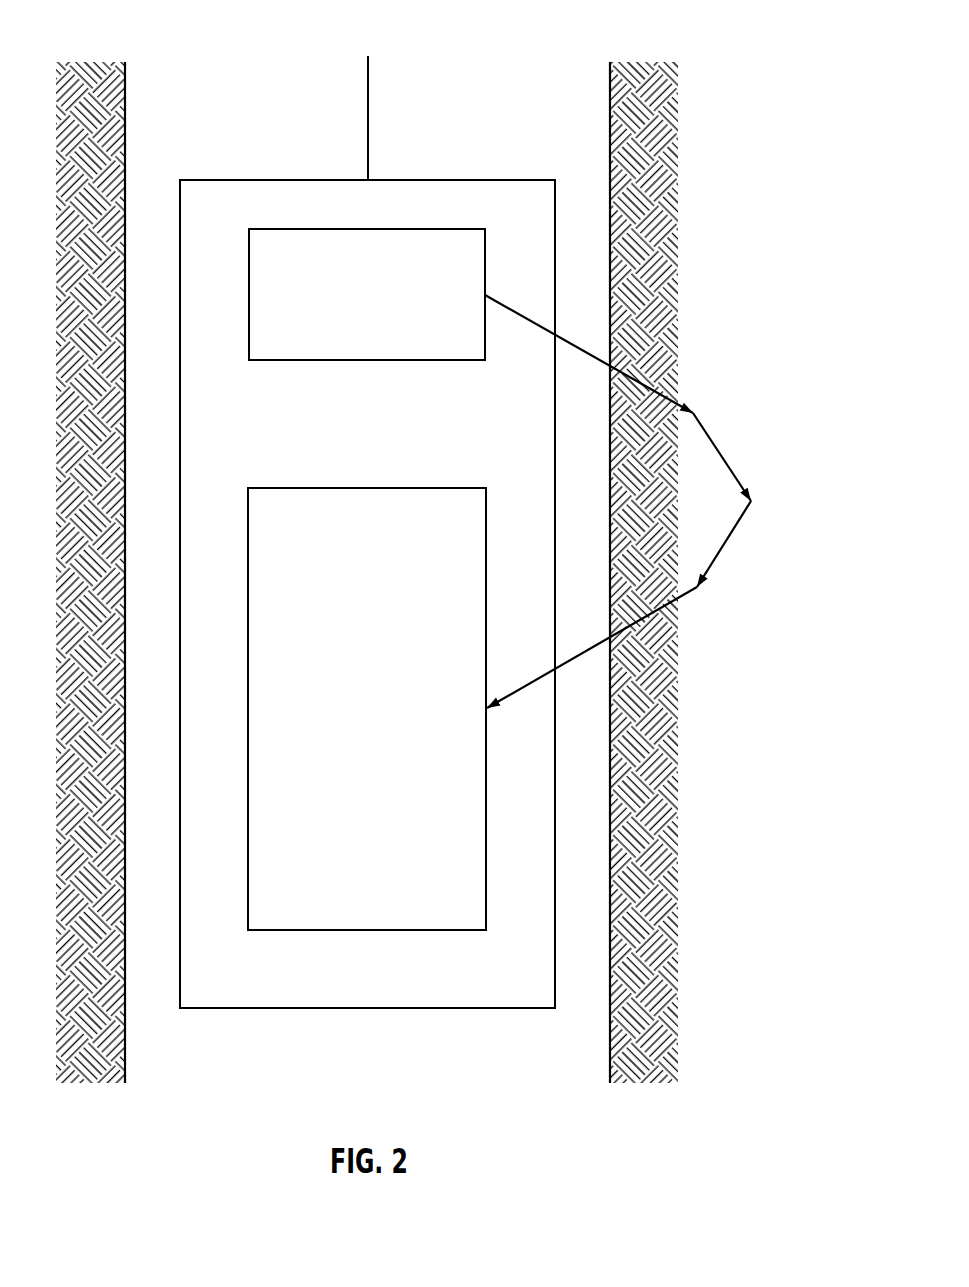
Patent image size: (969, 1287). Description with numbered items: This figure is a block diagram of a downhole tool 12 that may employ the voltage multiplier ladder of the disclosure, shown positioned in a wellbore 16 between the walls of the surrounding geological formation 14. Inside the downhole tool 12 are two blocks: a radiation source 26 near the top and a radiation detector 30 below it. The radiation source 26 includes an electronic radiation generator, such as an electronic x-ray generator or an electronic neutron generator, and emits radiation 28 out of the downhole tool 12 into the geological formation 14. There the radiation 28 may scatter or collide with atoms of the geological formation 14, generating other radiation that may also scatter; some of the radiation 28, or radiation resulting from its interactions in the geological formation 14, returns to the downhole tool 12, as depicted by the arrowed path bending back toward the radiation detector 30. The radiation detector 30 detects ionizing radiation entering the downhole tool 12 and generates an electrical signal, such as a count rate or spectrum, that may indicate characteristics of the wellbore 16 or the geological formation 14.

The downhole tool 12 is at (176, 184).
The geological formation 14 is at (751, 378).
The wellbore 16 is at (505, 105).
The radiation source 26 is at (440, 229).
The radiation 28 is at (727, 458).
The radiation detector 30 is at (440, 488).